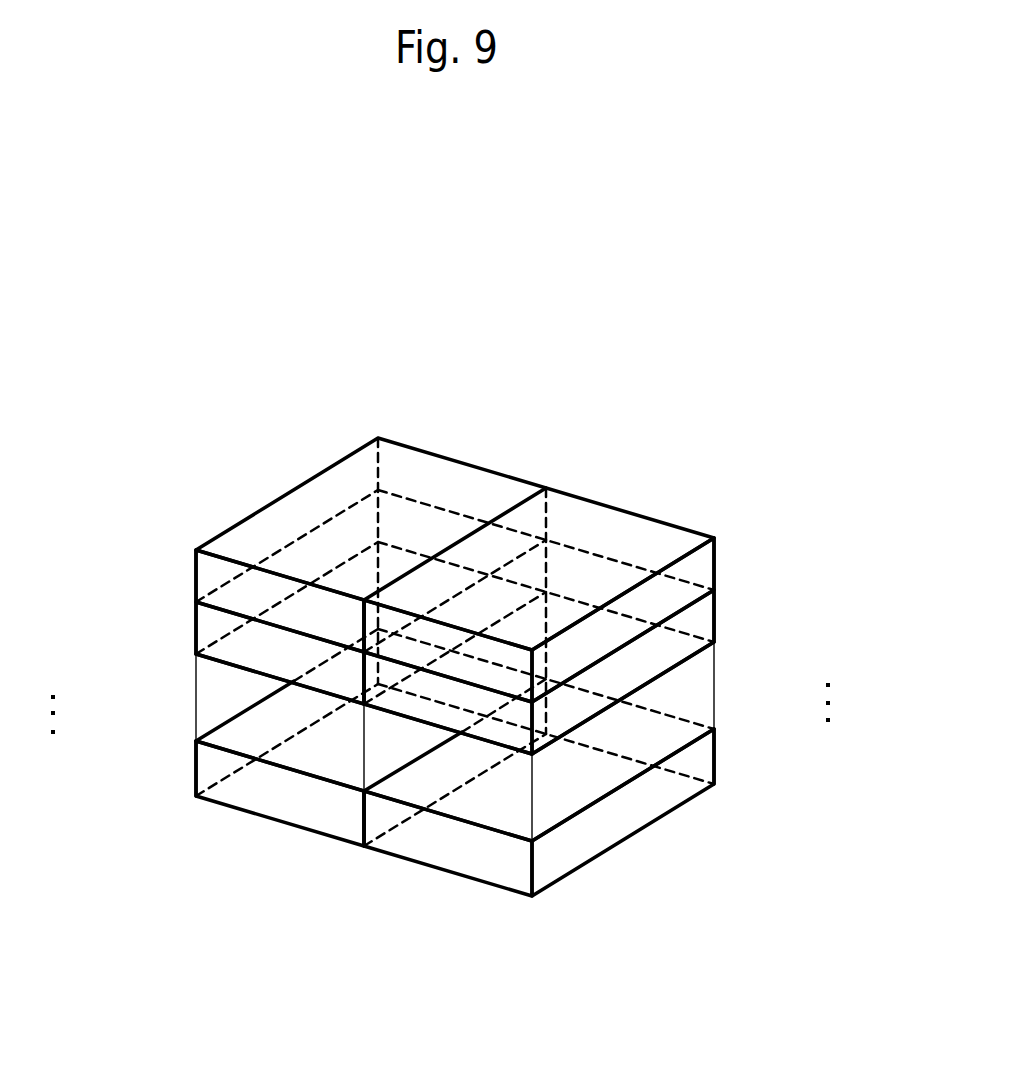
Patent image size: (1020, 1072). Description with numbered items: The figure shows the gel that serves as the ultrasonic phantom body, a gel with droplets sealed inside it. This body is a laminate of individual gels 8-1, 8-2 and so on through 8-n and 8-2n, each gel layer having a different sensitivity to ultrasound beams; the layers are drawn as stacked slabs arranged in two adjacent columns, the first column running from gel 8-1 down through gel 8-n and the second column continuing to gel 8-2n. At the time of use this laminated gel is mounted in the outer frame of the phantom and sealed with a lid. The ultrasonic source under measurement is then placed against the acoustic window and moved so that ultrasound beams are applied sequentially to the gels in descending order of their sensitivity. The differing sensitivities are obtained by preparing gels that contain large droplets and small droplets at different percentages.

The gel 8-1 is at (196, 577).
The gel 8-2 is at (196, 625).
The gel 8-n is at (196, 770).
The gel 8-2n is at (714, 757).